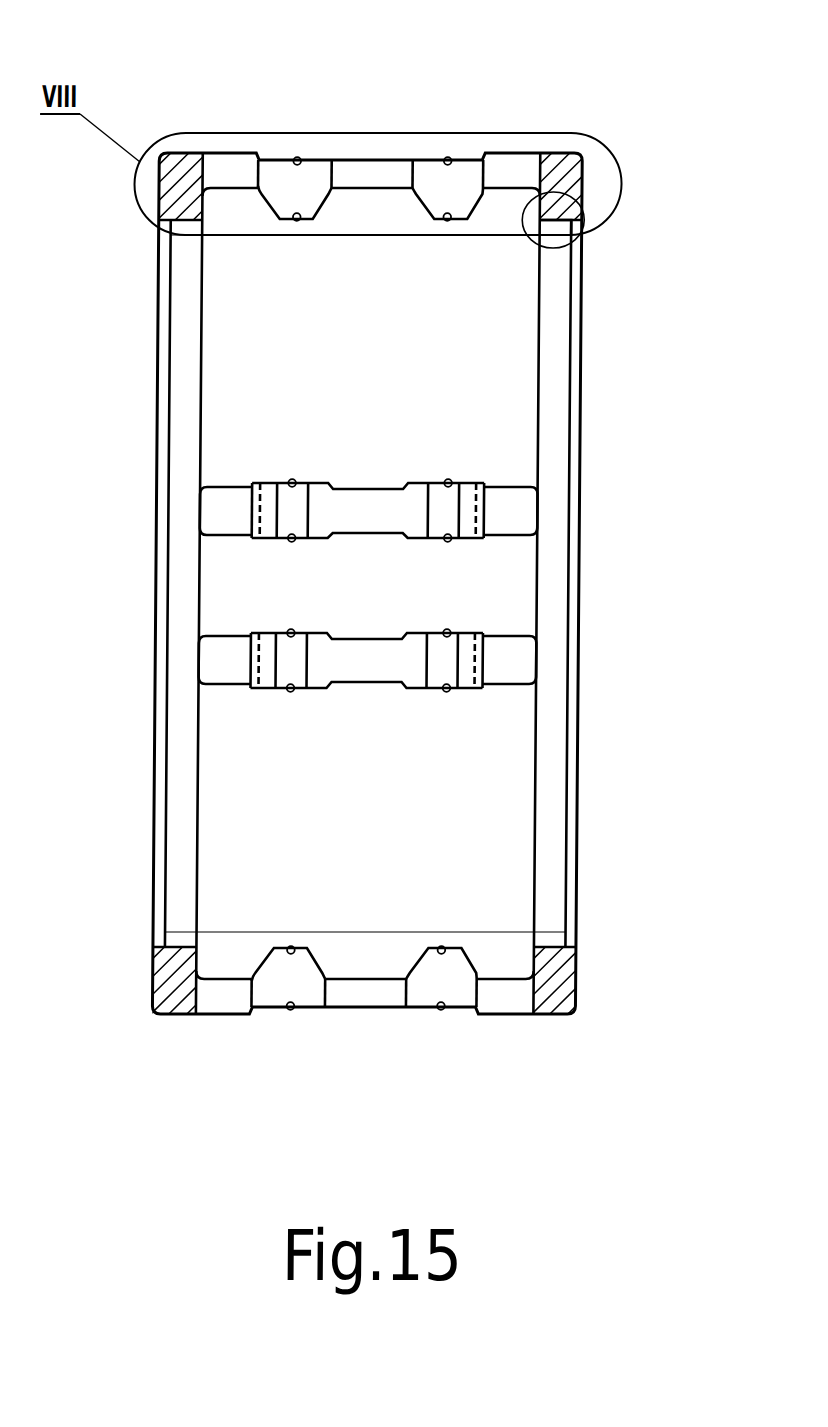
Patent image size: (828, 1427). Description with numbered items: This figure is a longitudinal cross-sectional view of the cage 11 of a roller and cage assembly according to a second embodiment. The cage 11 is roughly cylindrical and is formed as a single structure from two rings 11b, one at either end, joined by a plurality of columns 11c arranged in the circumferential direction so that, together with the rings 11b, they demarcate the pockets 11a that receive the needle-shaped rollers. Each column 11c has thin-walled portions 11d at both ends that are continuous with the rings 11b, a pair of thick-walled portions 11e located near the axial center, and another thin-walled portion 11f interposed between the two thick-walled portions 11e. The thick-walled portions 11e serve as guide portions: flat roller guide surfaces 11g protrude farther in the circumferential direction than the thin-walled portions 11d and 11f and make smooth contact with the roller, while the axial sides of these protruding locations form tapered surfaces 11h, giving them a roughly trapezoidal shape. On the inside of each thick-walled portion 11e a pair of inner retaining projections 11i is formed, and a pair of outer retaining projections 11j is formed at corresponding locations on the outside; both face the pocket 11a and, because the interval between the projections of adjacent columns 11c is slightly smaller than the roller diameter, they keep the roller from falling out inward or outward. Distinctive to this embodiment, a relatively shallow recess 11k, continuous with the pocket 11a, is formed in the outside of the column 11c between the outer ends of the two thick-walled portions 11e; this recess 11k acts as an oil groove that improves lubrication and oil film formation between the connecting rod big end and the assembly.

The cage 11 is at (600, 298).
The pocket 11a is at (590, 228).
The ring 11b is at (186, 165).
The column 11c is at (383, 156).
The thin-walled portion 11d is at (238, 165).
The thick-walled portion 11e is at (288, 175).
The thin-walled portion 11f is at (415, 178).
The roller guide surface 11g is at (262, 487).
The tapered surface 11h is at (272, 208).
The inner retaining projection 11i is at (300, 222).
The outer retaining projection 11j is at (299, 157).
The recess 11k is at (325, 172).